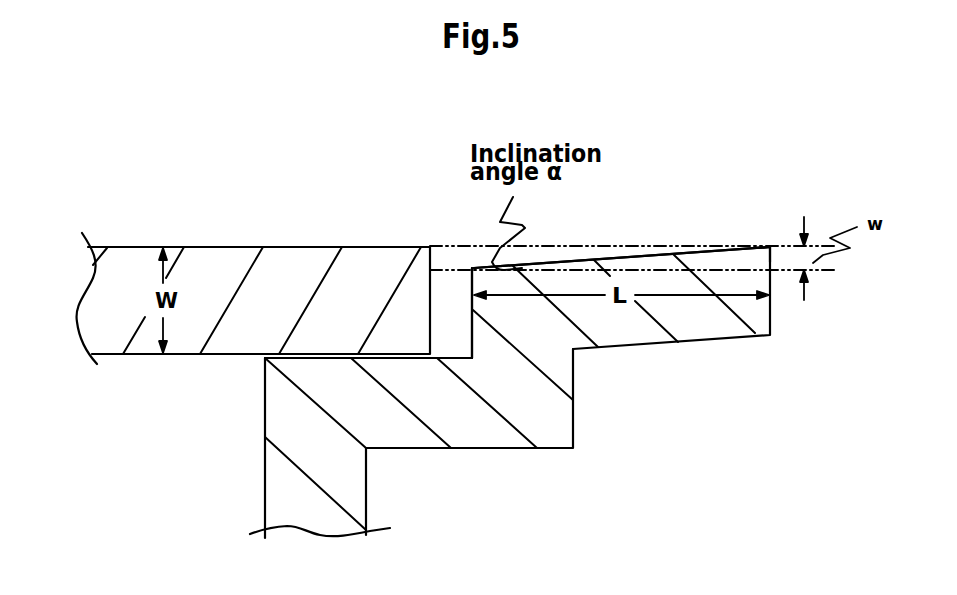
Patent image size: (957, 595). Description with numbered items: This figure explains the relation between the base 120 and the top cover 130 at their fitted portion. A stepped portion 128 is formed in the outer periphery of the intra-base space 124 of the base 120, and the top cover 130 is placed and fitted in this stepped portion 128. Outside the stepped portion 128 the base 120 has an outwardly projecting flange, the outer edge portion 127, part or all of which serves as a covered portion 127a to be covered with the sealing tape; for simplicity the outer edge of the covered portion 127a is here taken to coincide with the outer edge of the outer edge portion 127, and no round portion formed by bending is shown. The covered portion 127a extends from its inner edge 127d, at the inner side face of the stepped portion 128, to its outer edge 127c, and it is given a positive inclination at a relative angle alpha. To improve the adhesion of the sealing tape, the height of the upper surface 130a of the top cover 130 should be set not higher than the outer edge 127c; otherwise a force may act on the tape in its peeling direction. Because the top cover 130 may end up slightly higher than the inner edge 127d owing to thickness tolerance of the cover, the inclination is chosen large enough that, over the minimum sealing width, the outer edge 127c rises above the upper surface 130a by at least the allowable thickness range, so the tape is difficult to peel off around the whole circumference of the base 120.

The base 120 is at (487, 463).
The intra-base space 124 is at (265, 453).
The outer edge portion 127 is at (724, 340).
The covered portion 127a is at (645, 254).
The outer edge 127c is at (765, 246).
The inner edge 127d is at (473, 305).
The stepped portion 128 is at (440, 357).
The top cover 130 is at (277, 297).
The upper surface 130a is at (315, 247).